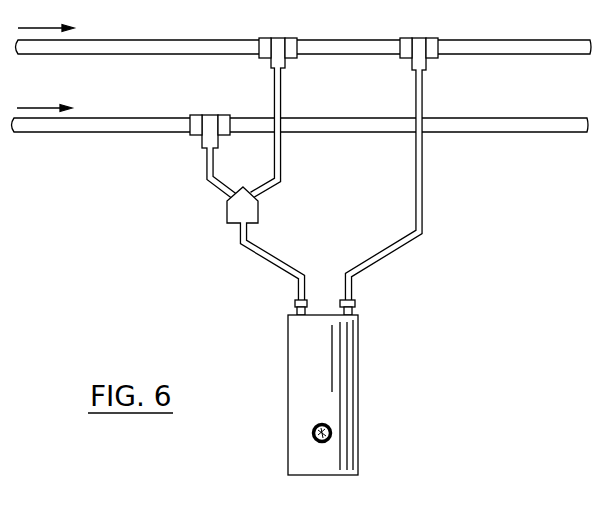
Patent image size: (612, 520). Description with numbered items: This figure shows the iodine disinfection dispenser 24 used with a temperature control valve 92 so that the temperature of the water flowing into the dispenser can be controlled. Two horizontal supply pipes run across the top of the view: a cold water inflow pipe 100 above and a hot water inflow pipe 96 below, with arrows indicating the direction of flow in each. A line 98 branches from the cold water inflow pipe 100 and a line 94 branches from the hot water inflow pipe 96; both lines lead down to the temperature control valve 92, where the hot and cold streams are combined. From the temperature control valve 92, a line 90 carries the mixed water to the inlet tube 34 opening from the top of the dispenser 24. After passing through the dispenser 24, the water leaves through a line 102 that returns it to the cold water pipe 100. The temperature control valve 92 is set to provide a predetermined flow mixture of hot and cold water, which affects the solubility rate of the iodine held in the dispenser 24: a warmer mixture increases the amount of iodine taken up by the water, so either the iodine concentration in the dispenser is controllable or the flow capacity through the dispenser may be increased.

The cold water inflow pipe 100 is at (187, 40).
The hot water inflow pipe 96 is at (137, 126).
The line 98 is at (284, 89).
The line 94 is at (203, 167).
The temperature control valve 92 is at (232, 213).
The line 90 is at (268, 261).
The inlet tube 34 is at (295, 302).
The iodine disinfection dispenser 24 is at (296, 363).
The line 102 is at (422, 206).